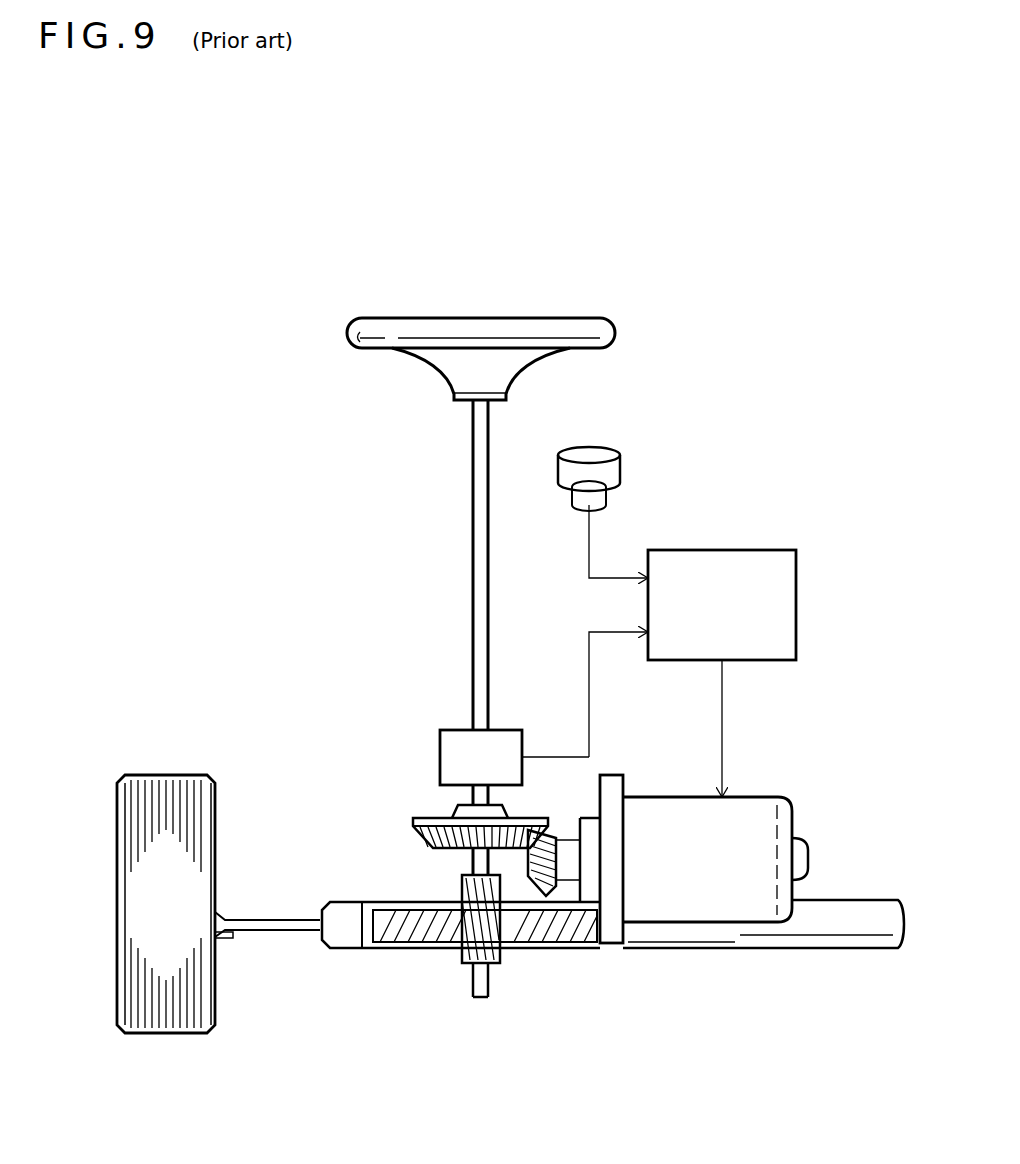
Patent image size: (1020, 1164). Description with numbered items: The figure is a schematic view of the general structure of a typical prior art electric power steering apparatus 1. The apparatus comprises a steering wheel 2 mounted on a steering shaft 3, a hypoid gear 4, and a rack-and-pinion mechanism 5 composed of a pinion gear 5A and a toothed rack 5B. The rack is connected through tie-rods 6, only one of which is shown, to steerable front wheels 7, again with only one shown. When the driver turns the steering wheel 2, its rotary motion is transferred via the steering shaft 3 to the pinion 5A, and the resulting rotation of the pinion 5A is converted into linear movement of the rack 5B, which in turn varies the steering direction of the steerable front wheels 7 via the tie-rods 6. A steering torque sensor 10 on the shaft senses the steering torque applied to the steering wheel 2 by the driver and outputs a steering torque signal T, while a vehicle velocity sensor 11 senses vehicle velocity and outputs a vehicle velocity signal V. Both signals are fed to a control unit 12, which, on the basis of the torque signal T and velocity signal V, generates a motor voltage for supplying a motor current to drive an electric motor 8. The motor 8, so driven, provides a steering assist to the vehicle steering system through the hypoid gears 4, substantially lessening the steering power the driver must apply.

The electric power steering apparatus 1 is at (516, 250).
The steering wheel 2 is at (536, 322).
The steering shaft 3 is at (473, 590).
The hypoid gear 4 is at (546, 888).
The rack-and-pinion mechanism 5 is at (447, 963).
The pinion gear 5A is at (506, 956).
The toothed rack 5B is at (838, 920).
The tie-rod 6 is at (256, 940).
The steerable front wheel 7 is at (165, 775).
The electric motor 8 is at (750, 843).
The steering torque sensor 10 is at (440, 757).
The vehicle velocity sensor 11 is at (601, 460).
The control unit 12 is at (751, 550).